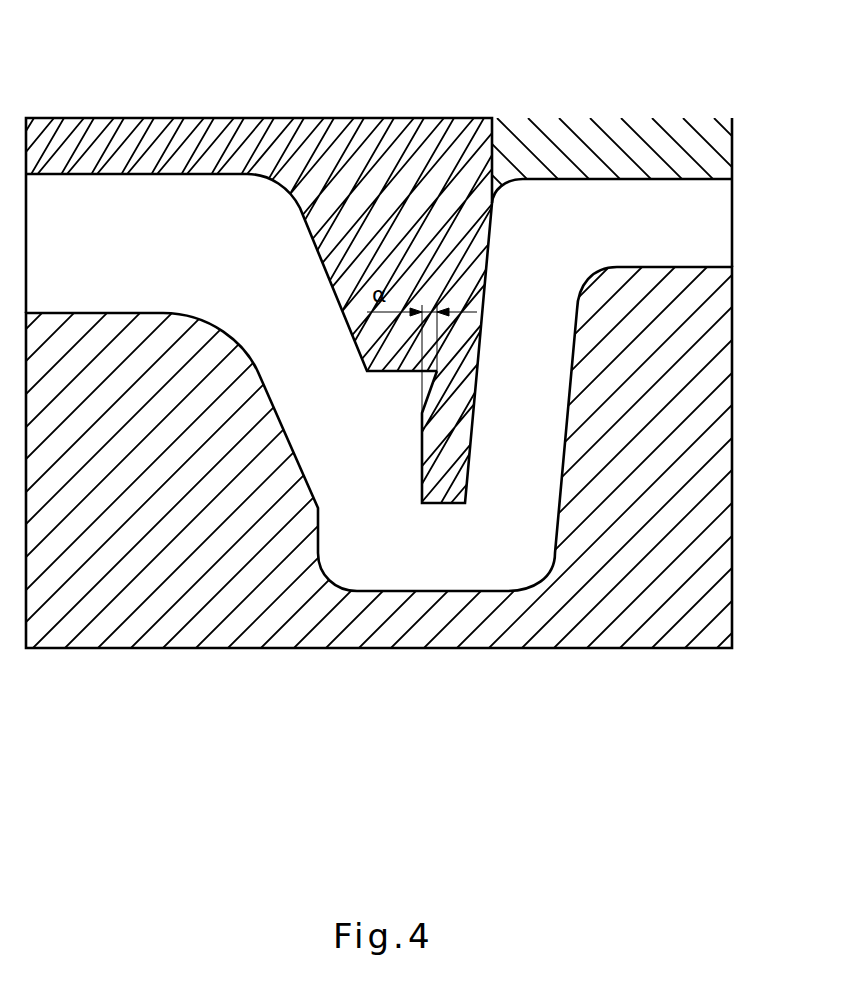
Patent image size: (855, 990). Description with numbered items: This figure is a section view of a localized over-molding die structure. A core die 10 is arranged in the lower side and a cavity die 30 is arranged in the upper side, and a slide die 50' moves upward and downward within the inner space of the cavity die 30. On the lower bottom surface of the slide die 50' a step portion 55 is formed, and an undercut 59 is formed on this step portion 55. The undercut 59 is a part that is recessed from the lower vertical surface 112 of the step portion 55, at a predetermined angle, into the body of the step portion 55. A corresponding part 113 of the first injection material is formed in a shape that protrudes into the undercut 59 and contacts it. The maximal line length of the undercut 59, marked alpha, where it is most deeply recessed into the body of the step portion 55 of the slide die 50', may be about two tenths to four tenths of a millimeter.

The core die 10 is at (722, 462).
The cavity die 30 is at (605, 130).
The slide die 50' is at (259, 264).
The undercut 59 is at (478, 387).
The step portion 55 is at (443, 518).
The lower vertical surface 112 is at (420, 472).
The corresponding part 113 is at (478, 387).